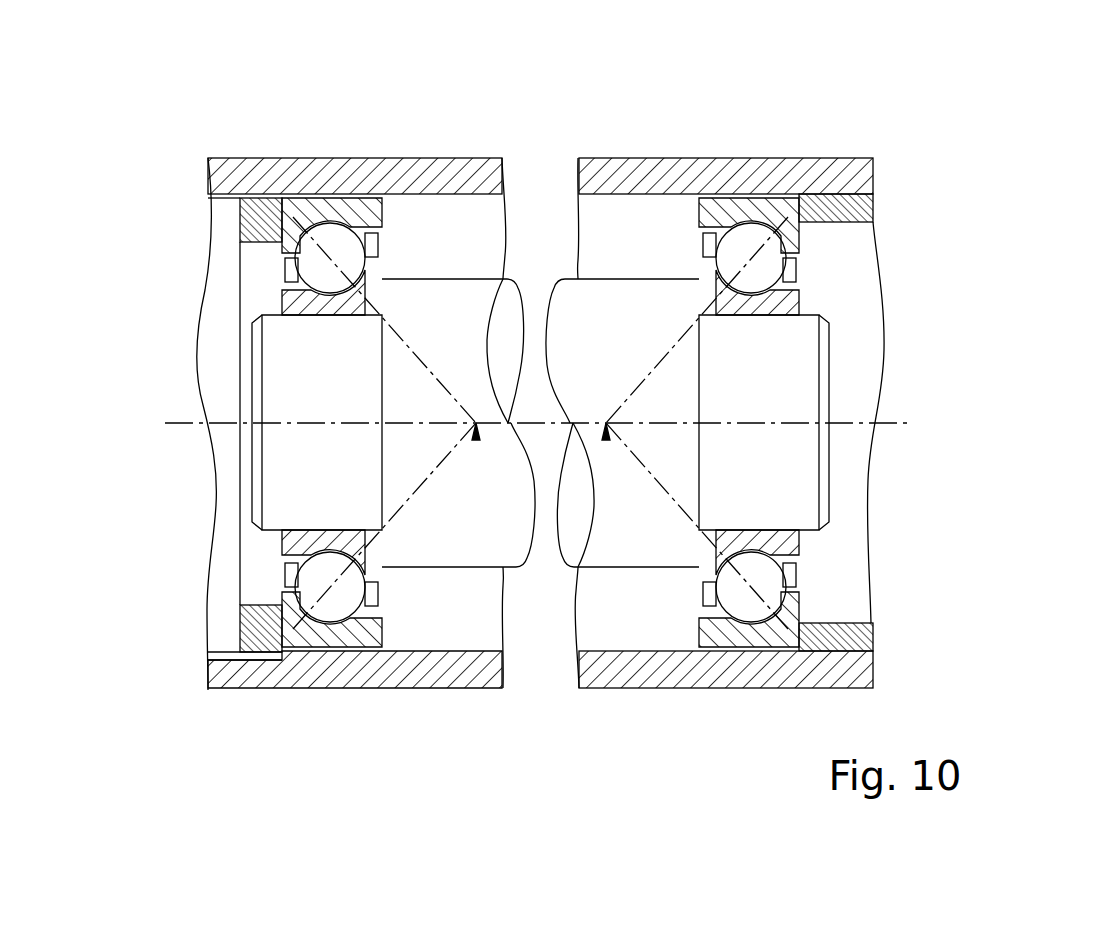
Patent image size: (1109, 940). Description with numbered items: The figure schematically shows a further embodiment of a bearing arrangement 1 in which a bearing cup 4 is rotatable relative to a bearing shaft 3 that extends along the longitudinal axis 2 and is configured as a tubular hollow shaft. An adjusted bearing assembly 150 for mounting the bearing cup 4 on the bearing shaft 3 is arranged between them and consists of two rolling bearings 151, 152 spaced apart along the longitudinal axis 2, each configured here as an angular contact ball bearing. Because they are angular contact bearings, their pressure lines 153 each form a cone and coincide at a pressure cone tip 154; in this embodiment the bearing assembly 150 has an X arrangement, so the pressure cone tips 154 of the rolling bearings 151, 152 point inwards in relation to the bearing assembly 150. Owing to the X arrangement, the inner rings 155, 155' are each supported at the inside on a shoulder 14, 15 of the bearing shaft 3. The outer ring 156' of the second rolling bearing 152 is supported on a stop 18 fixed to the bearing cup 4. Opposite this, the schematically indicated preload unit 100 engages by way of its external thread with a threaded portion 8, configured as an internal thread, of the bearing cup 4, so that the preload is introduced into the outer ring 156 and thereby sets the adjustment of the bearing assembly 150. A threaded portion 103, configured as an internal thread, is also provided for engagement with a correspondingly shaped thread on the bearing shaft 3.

The bearing arrangement 1 is at (127, 112).
The adjusted bearing assembly 150 is at (840, 116).
The rolling bearing 151 is at (318, 213).
The rolling bearing 152 is at (738, 207).
The pressure lines 153 is at (390, 333).
The pressure cone tip 154 is at (476, 440).
The inner ring 155 is at (224, 552).
The inner ring 155' is at (854, 552).
The outer ring 156 is at (340, 160).
The outer ring 156' is at (845, 237).
The bearing cup 4 is at (448, 177).
The preload unit 100 is at (240, 213).
The stop 18 is at (862, 208).
The bearing shaft 3 is at (288, 357).
The longitudinal axis 2 is at (882, 423).
The threaded portion 8 is at (222, 652).
The threaded portion 103 is at (262, 657).
The shoulder 14 is at (390, 547).
The shoulder 15 is at (692, 547).